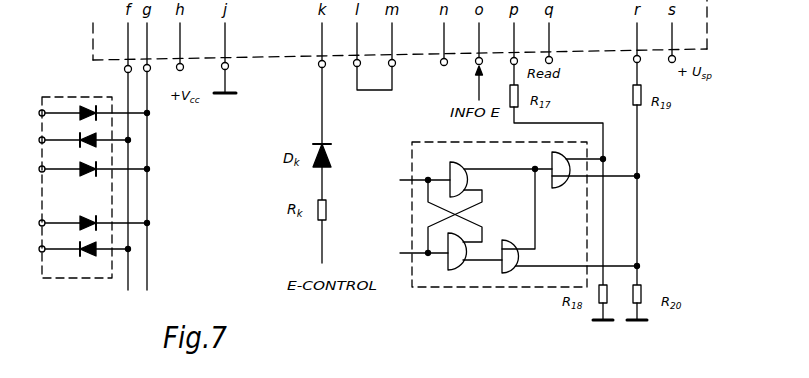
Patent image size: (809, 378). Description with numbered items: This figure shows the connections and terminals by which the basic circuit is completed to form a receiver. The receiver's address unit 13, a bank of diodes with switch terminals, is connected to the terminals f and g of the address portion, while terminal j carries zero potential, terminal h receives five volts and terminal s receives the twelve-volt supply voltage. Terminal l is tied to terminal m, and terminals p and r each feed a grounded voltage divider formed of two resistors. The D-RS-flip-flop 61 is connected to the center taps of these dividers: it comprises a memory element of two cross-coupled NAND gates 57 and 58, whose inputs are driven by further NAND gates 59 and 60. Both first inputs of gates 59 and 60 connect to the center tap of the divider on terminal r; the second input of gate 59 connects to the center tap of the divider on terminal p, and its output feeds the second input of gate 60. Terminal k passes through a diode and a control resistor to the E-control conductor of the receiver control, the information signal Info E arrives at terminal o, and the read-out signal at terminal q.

The address unit 13 is at (55, 97).
The N-AND-gate 57 is at (452, 170).
The N-AND-gate 58 is at (446, 262).
The further N-AND-gate 59 is at (560, 186).
The further N-AND-gate 60 is at (512, 268).
The D-RS-flip-flop 61 is at (415, 287).